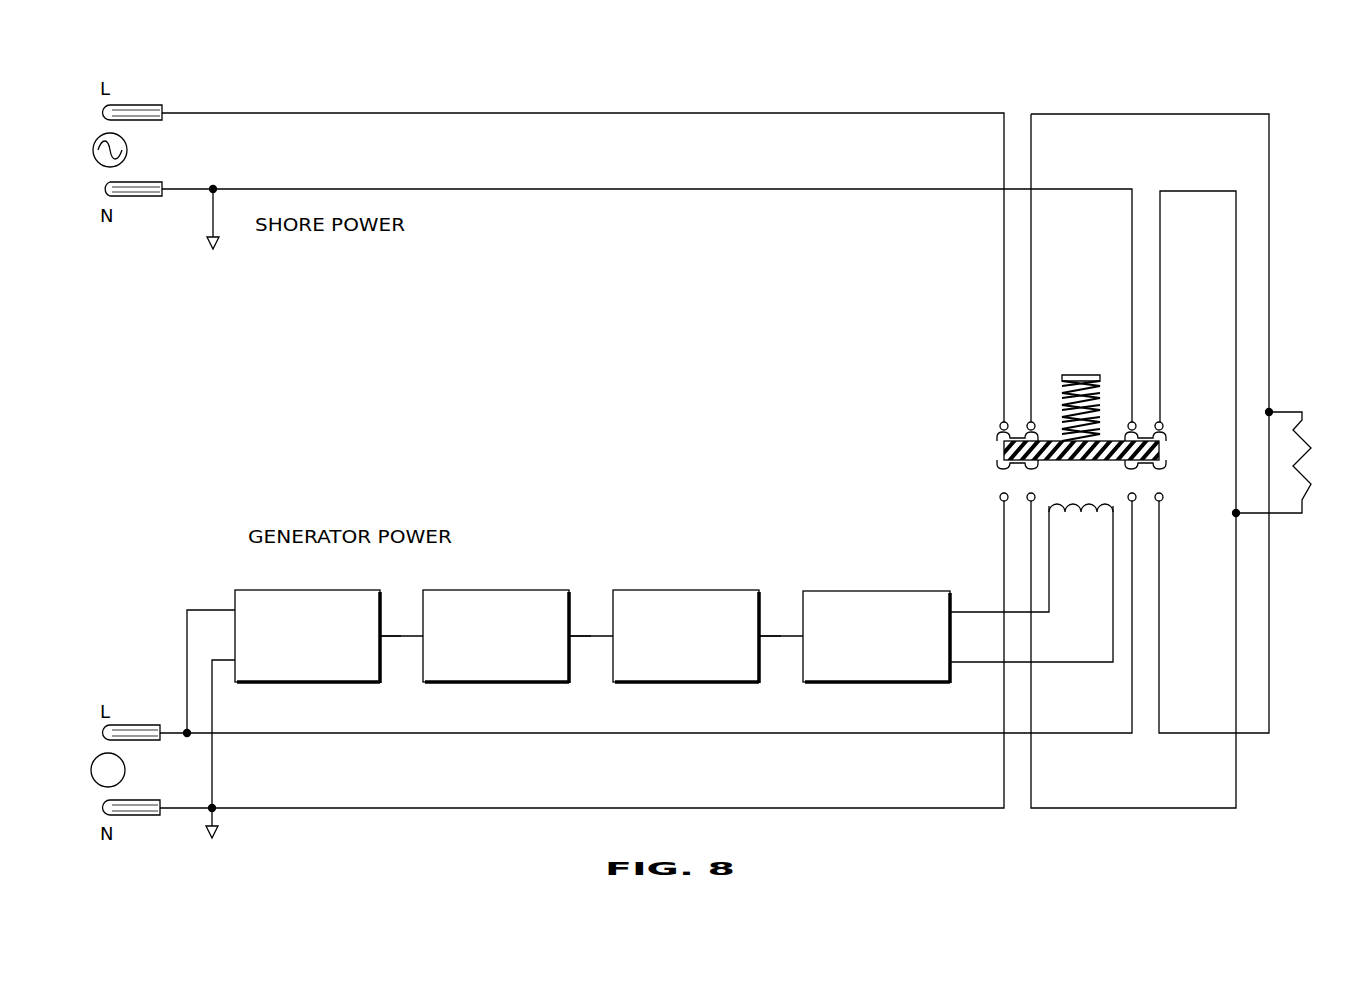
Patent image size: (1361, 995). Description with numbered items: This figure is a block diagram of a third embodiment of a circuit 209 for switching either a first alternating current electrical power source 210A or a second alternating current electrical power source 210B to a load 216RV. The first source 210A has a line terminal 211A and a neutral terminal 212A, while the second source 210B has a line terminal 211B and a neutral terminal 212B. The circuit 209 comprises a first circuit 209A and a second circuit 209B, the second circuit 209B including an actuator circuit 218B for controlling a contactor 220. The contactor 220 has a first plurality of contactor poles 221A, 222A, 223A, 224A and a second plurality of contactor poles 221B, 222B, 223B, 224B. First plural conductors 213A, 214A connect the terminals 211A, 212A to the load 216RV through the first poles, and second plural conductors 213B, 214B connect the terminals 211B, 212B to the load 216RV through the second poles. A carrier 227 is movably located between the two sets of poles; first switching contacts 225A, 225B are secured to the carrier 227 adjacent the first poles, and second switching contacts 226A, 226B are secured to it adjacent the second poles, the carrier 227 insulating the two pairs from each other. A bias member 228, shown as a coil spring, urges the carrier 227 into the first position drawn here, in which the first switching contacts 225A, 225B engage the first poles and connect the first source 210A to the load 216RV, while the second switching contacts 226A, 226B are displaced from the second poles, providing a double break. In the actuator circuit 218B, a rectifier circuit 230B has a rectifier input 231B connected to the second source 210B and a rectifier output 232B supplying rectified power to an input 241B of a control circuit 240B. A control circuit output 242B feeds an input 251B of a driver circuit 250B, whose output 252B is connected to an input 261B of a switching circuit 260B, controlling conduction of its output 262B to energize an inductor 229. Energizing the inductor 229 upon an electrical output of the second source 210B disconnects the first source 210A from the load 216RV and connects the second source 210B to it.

The circuit 209 is at (563, 100).
The first circuit 209A is at (275, 305).
The second circuit 209B is at (268, 491).
The first alternating current electrical power source 210A is at (128, 150).
The second alternating current electrical power source 210B is at (125, 772).
The terminal 211A is at (150, 105).
The terminal 212A is at (154, 199).
The first conductor 213A is at (725, 113).
The first conductor 214A is at (730, 190).
The terminal 211B is at (146, 725).
The terminal 212B is at (152, 818).
The second conductor 213B is at (495, 732).
The second conductor 214B is at (502, 809).
The load 216RV is at (1316, 440).
The actuator circuit 218B is at (583, 532).
The contactor 220 is at (908, 414).
The contactor pole 221A is at (1002, 422).
The contactor pole 222A is at (1031, 422).
The contactor pole 223A is at (1132, 422).
The contactor pole 224A is at (1160, 422).
The first switching contact 225A is at (999, 437).
The first switching contact 225B is at (1164, 437).
The second switching contact 226A is at (999, 464).
The second switching contact 226B is at (1164, 464).
The carrier 227 is at (1004, 447).
The bias member 228 is at (1081, 375).
The inductor 229 is at (1088, 512).
The contactor pole 221B is at (1002, 500).
The contactor pole 222B is at (1031, 502).
The contactor pole 223B is at (1132, 502).
The contactor pole 224B is at (1161, 500).
The rectifier circuit 230B is at (310, 590).
The rectifier input 231B is at (225, 663).
The rectifier output 232B is at (392, 634).
The control circuit 240B is at (498, 590).
The control circuit input 241B is at (406, 640).
The control circuit output 242B is at (583, 634).
The driver circuit 250B is at (688, 590).
The driver circuit input 251B is at (597, 640).
The driver circuit output 252B is at (771, 634).
The switching circuit 260B is at (878, 590).
The switching circuit input 261B is at (786, 640).
The switching circuit output 262B is at (976, 665).